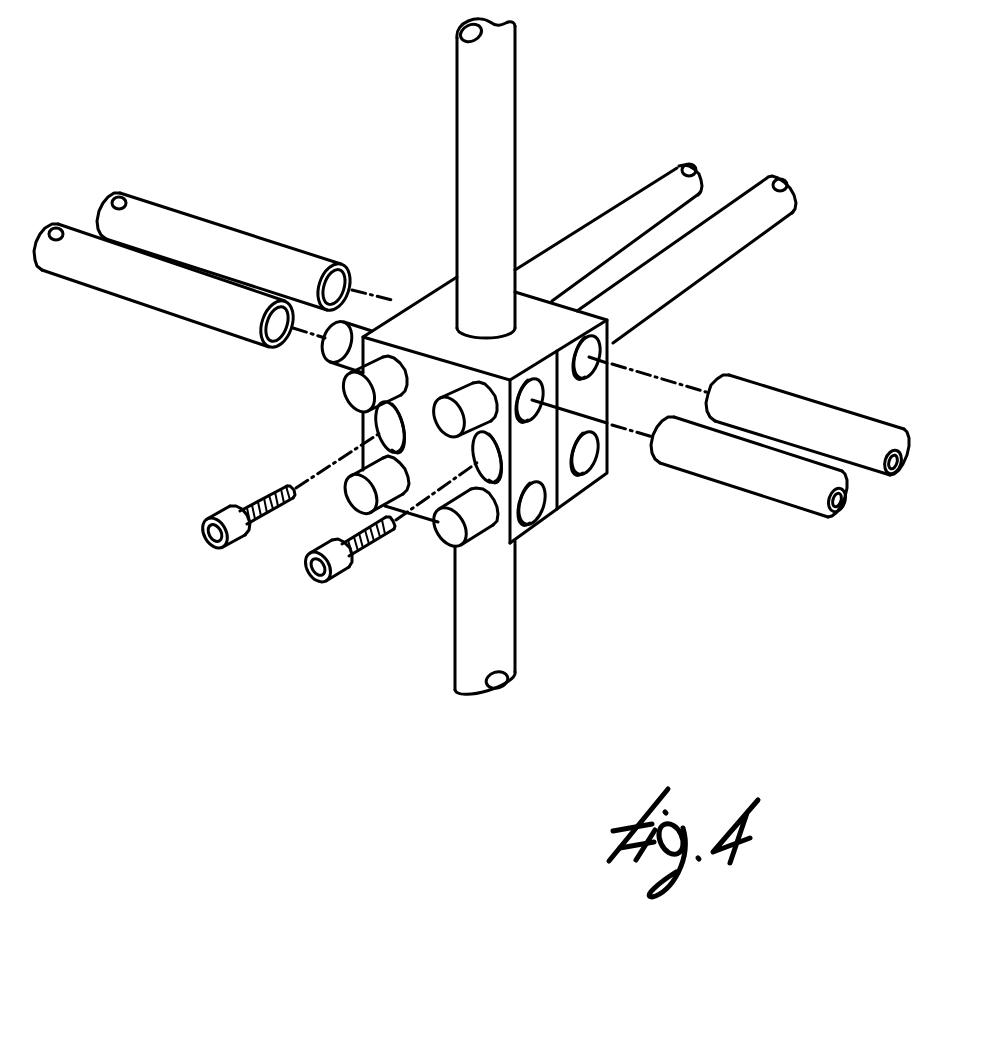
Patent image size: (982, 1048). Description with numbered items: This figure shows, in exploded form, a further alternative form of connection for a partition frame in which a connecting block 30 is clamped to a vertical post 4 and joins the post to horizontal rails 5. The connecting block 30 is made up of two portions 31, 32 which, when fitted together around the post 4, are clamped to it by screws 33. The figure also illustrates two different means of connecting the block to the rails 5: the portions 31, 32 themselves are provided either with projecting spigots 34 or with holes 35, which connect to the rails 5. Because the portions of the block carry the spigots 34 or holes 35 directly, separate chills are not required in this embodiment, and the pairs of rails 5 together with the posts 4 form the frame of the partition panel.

The post 4 is at (502, 155).
The rails 5 is at (197, 227).
The connecting block 30 is at (534, 462).
The first portion 31 is at (550, 514).
The second portion 32 is at (583, 490).
The screws 33 is at (300, 577).
The spigots 34 is at (445, 418).
The holes 35 is at (590, 447).